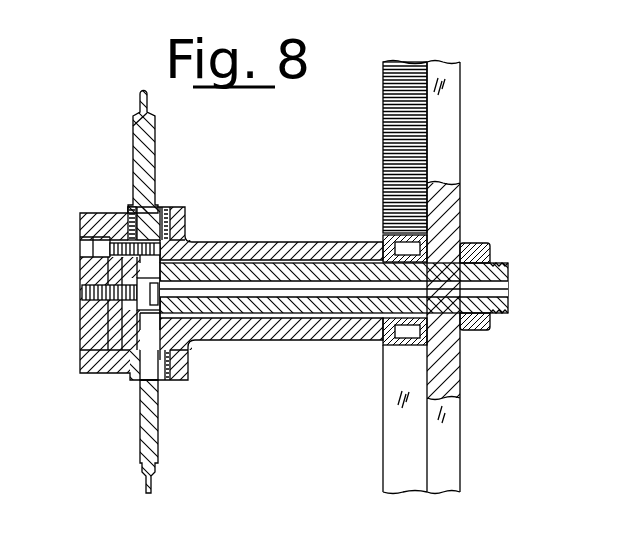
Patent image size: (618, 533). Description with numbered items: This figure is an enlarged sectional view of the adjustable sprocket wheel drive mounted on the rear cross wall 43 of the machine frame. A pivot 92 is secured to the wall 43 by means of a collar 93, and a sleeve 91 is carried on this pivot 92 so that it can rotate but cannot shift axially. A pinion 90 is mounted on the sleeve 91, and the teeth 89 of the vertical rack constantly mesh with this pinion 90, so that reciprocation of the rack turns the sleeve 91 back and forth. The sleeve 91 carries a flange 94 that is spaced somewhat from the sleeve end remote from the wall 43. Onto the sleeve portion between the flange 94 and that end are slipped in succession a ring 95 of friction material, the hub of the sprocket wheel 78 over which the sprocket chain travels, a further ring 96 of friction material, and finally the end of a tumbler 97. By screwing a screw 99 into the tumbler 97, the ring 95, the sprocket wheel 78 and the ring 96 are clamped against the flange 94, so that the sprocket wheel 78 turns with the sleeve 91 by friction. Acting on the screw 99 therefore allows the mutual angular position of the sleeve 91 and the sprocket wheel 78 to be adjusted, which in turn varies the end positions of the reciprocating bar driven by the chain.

The rear cross wall 43 is at (452, 100).
The sprocket wheel 78 is at (147, 152).
The teeth 89 is at (380, 135).
The pinion 90 is at (383, 333).
The sleeve 91 is at (292, 243).
The pivot 92 is at (287, 312).
The collar 93 is at (483, 324).
The flange 94 is at (183, 365).
The ring of friction material 95 is at (180, 223).
The further ring of friction material 96 is at (128, 213).
The tumbler 97 is at (83, 218).
The screw 99 is at (82, 290).